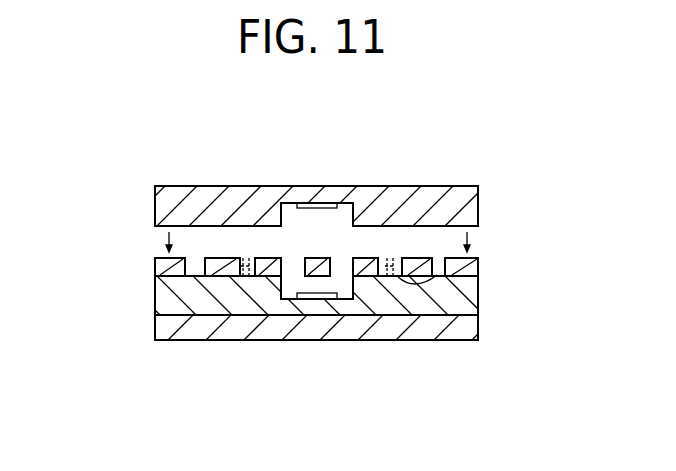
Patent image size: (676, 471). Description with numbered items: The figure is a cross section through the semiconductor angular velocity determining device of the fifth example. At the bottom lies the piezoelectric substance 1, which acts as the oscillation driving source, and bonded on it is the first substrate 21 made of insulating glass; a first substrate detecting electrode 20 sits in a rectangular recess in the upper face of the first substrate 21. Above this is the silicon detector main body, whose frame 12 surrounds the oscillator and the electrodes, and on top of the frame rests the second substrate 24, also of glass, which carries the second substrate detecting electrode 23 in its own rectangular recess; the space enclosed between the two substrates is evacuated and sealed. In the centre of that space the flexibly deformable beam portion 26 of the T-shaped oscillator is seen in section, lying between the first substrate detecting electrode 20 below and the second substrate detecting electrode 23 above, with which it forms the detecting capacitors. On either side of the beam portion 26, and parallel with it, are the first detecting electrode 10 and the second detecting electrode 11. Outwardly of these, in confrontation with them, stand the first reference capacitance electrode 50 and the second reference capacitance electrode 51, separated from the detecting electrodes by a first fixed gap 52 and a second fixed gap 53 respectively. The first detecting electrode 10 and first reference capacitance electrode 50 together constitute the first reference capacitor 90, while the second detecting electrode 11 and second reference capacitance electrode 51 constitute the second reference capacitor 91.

The piezoelectric substance 1 is at (470, 327).
The first detecting electrode 10 is at (268, 268).
The second detecting electrode 11 is at (367, 262).
The frame 12 is at (157, 268).
The first substrate detecting electrode 20 is at (323, 286).
The first substrate 21 is at (468, 297).
The second substrate detecting electrode 23 is at (318, 213).
The second substrate 24 is at (473, 202).
The beam portion 26 is at (292, 390).
The first reference capacitance electrode 50 is at (227, 273).
The second reference capacitance electrode 51 is at (420, 260).
The first fixed gap 52 is at (244, 276).
The second fixed gap 53 is at (392, 277).
The first reference capacitor 90 is at (247, 257).
The second reference capacitor 91 is at (475, 262).